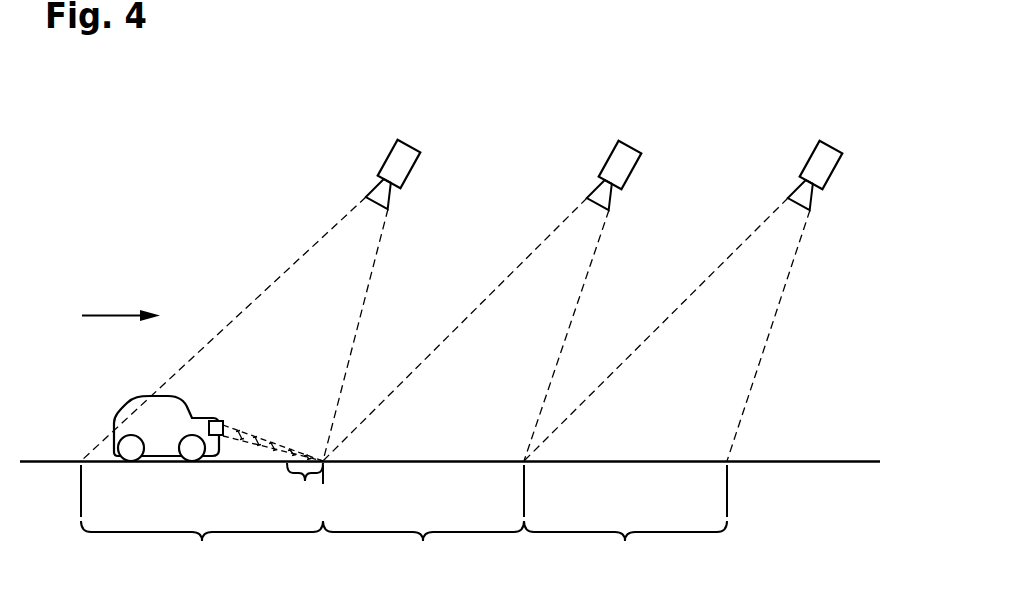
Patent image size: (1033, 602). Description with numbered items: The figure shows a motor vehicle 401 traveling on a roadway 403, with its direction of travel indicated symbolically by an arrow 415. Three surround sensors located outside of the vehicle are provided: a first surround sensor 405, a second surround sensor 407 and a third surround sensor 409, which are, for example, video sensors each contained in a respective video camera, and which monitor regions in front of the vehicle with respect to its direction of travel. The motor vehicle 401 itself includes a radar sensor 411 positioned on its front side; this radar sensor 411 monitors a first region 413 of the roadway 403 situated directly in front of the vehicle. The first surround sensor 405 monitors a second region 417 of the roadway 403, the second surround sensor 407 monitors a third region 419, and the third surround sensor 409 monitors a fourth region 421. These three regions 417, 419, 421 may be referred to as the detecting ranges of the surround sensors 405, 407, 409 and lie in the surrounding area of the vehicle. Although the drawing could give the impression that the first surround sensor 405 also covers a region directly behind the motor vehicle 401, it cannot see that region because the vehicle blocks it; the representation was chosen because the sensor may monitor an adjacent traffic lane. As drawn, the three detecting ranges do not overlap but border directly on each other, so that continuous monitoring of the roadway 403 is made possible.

The motor vehicle 401 is at (116, 418).
The roadway 403 is at (848, 460).
The first surround sensor 405 is at (387, 151).
The second surround sensor 407 is at (608, 152).
The third surround sensor 409 is at (812, 152).
The radar sensor 411 is at (218, 419).
The first region 413 is at (302, 490).
The direction of travel 415 is at (112, 314).
The second region 417 is at (202, 521).
The third region 419 is at (423, 521).
The fourth region 421 is at (625, 521).